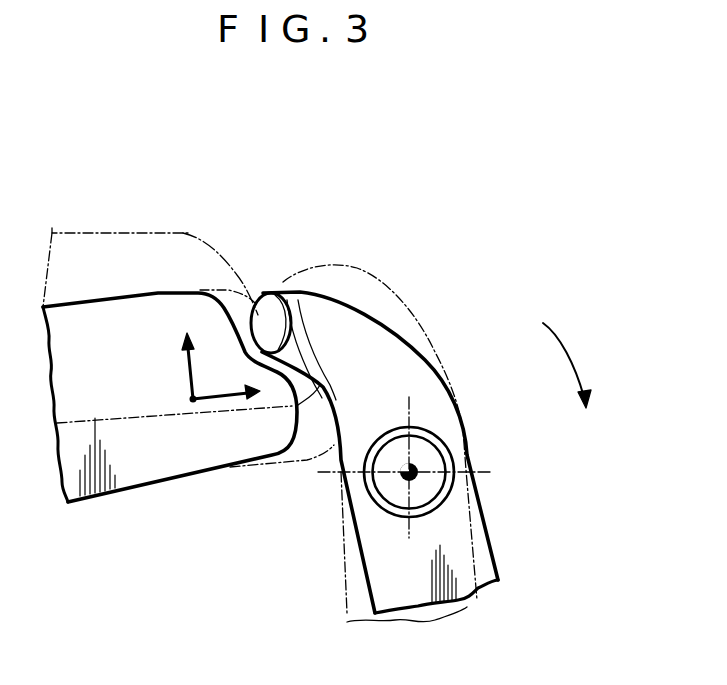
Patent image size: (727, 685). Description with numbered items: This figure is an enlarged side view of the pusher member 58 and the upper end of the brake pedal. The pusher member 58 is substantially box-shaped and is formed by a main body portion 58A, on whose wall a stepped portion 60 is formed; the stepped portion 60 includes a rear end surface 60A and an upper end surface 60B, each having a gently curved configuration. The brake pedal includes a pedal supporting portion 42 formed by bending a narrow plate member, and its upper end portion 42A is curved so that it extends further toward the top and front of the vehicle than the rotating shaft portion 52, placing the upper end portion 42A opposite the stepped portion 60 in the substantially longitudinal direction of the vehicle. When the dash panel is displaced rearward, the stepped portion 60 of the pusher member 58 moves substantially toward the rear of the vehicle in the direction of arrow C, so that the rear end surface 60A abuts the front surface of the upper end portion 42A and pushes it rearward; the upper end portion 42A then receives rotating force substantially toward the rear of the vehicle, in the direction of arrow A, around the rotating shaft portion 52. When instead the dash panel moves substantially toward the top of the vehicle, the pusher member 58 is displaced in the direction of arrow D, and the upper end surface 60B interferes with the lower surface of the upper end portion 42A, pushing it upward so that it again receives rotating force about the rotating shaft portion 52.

The pusher member 58 is at (195, 360).
The main body portion 58A is at (141, 231).
The pedal supporting portion 42 is at (340, 425).
The upper end portion 42A is at (255, 331).
The stepped portion 60 is at (300, 269).
The rear end surface 60A is at (333, 385).
The upper end surface 60B is at (262, 292).
The rotating shaft portion 52 is at (442, 424).
The arrow A is at (567, 355).
The arrow C is at (230, 397).
The arrow D is at (190, 373).